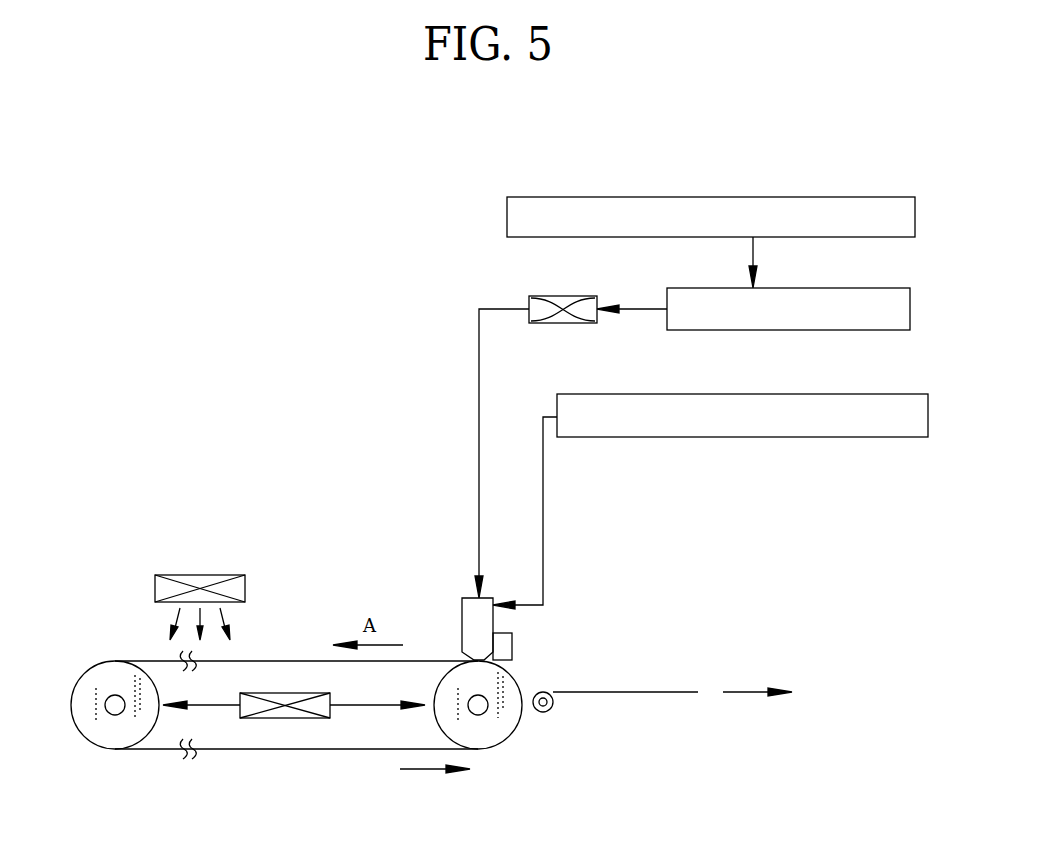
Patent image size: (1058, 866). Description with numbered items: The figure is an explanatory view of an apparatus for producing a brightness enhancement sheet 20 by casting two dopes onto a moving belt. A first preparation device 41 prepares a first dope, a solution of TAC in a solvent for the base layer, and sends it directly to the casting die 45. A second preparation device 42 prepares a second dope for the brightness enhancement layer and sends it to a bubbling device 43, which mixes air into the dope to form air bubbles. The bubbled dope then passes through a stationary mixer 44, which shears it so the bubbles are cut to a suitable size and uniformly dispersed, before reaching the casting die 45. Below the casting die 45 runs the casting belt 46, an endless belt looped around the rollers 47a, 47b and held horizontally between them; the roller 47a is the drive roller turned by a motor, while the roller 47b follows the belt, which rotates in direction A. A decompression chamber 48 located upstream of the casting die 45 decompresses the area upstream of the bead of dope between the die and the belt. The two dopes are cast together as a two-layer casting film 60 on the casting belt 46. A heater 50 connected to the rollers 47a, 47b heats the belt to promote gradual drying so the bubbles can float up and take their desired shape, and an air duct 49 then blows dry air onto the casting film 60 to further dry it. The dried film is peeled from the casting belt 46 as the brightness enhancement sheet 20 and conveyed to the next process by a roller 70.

The brightness enhancement sheet 20 is at (623, 692).
The first preparation device 41 is at (713, 394).
The second preparation device 42 is at (812, 197).
The bubbling device 43 is at (816, 288).
The stationary mixer 44 is at (548, 296).
The casting die 45 is at (462, 620).
The casting belt 46 is at (329, 740).
The roller 47a is at (123, 728).
The roller 47b is at (488, 734).
The decompression chamber 48 is at (512, 641).
The air duct 49 is at (210, 575).
The heater 50 is at (280, 718).
The casting film 60 is at (300, 661).
The roller 70 is at (552, 709).